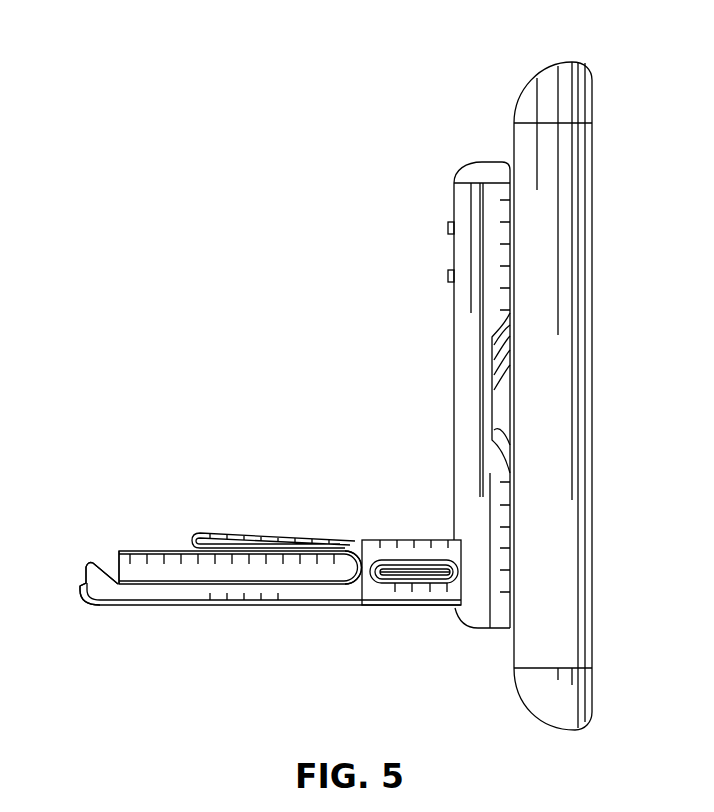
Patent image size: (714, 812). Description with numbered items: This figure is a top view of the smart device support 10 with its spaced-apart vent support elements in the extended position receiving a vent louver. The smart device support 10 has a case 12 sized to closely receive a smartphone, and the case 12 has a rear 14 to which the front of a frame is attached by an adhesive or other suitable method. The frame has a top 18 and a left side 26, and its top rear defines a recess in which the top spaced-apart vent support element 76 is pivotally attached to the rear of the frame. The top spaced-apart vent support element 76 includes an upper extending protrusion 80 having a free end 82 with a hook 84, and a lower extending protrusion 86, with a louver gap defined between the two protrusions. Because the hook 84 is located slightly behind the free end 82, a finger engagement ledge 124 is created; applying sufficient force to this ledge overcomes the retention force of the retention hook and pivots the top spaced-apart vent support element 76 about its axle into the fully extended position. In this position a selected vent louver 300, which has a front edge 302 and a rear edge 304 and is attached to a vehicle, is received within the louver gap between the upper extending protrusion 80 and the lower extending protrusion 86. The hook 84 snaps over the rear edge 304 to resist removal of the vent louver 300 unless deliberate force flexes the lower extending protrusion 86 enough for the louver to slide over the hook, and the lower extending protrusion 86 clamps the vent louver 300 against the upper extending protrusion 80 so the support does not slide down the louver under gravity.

The smart device support 10 is at (164, 136).
The case 12 is at (555, 369).
The rear 14 is at (514, 135).
The top 18 is at (497, 310).
The left side 26 is at (492, 630).
The top spaced-apart vent support element 76 is at (143, 614).
The upper extending protrusion 80 is at (203, 614).
The free end 82 is at (78, 588).
The hook 84 is at (90, 560).
The lower extending protrusion 86 is at (254, 540).
The finger engagement ledge 124 is at (85, 578).
The vent louver 300 is at (161, 540).
The front edge 302 is at (362, 584).
The rear edge 304 is at (118, 560).